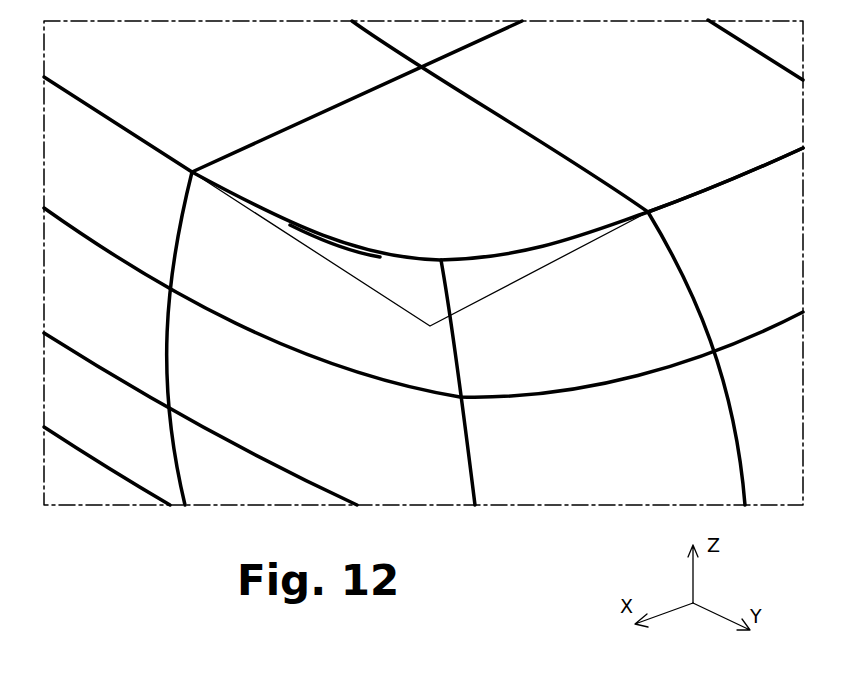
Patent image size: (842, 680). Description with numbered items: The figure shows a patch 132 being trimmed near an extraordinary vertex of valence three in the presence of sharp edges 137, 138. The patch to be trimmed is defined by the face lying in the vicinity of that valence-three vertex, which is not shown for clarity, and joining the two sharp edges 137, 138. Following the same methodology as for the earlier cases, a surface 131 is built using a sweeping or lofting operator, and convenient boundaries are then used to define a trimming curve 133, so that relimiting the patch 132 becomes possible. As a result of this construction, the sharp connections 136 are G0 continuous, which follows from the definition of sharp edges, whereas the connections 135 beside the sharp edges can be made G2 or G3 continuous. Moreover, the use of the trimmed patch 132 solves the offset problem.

The surface 131 is at (410, 313).
The patch 132 is at (443, 163).
The trimming curve 133 is at (323, 237).
The connections 135 is at (343, 100).
The sharp connections 136 is at (85, 100).
The sharp edge 137 is at (118, 125).
The sharp edge 138 is at (697, 197).